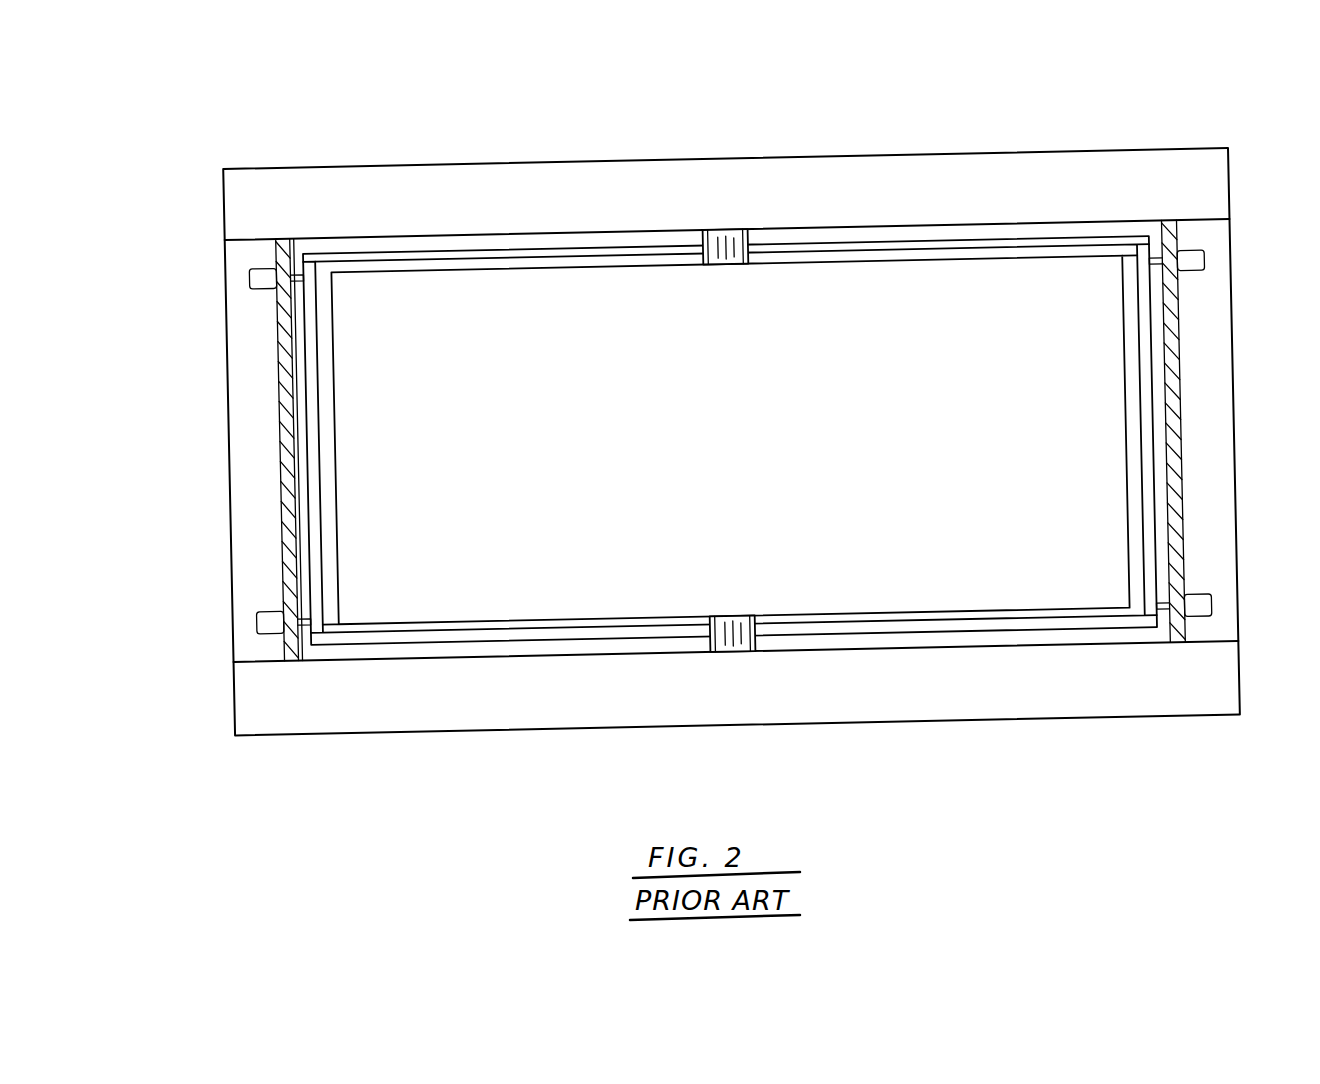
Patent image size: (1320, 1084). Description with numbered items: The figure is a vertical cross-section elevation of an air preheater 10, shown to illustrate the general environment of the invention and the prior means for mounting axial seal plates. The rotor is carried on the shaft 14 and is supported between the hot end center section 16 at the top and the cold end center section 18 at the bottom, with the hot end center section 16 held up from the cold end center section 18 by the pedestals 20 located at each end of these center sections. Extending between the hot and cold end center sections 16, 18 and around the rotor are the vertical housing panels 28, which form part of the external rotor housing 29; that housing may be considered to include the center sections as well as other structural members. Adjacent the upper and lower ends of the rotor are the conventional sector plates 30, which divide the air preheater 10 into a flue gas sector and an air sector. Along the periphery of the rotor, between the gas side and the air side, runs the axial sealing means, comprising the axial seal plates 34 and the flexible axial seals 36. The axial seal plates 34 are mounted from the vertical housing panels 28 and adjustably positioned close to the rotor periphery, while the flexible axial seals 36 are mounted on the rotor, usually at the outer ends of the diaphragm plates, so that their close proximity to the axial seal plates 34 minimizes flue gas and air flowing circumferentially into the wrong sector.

The air preheater 10 is at (1205, 95).
The shaft 14 is at (727, 256).
The hot end center section 16 is at (575, 173).
The cold end center section 18 is at (415, 712).
The pedestals 20 is at (240, 345).
The vertical housing panels 28 is at (283, 495).
The external rotor housing 29 is at (1185, 540).
The sector plates 30 is at (514, 250).
The axial seal plates 34 is at (315, 472).
The axial seals 36 is at (333, 385).